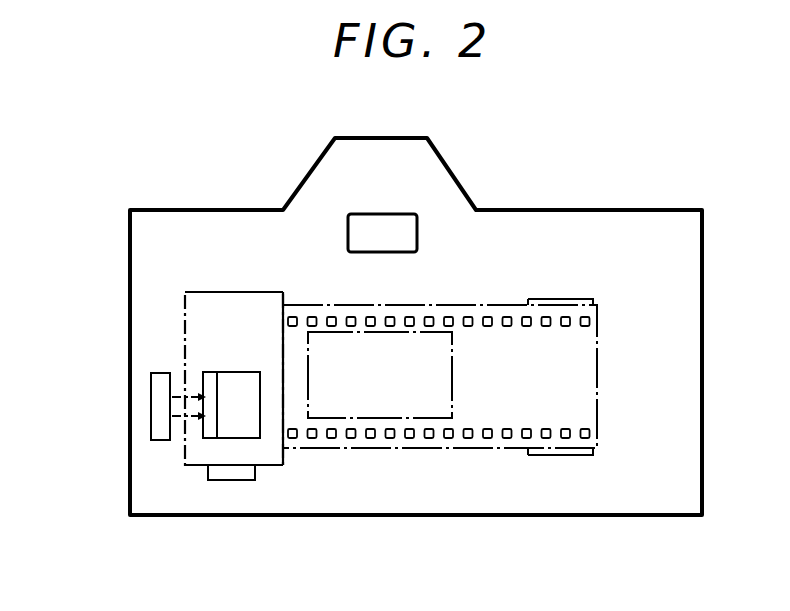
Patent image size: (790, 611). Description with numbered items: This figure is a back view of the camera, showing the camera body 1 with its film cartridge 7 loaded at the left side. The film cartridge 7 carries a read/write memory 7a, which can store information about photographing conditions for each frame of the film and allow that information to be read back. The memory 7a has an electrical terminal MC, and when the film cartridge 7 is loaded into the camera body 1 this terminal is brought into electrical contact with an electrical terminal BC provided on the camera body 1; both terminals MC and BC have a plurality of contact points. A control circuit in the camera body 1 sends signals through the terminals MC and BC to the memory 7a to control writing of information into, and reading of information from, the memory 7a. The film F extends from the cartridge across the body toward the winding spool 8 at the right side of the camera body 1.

The camera body 1 is at (546, 210).
The film cartridge 7 is at (185, 303).
The read/write memory 7a is at (248, 432).
The electrical terminal MC is at (210, 432).
The electrical terminal BC is at (152, 408).
The film F is at (588, 370).
The winding spool 8 is at (580, 299).